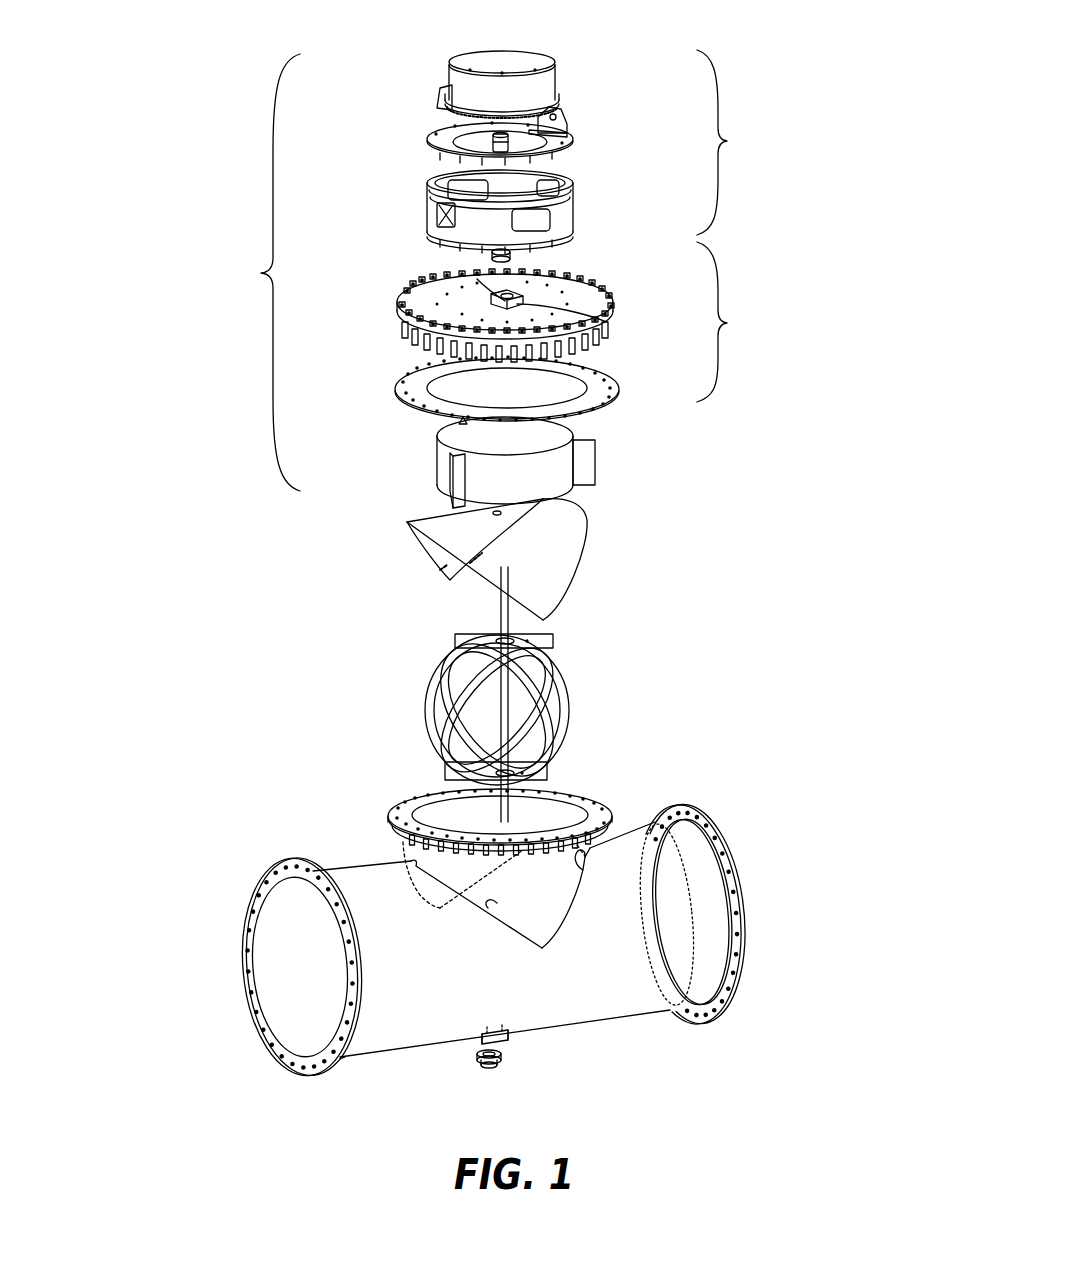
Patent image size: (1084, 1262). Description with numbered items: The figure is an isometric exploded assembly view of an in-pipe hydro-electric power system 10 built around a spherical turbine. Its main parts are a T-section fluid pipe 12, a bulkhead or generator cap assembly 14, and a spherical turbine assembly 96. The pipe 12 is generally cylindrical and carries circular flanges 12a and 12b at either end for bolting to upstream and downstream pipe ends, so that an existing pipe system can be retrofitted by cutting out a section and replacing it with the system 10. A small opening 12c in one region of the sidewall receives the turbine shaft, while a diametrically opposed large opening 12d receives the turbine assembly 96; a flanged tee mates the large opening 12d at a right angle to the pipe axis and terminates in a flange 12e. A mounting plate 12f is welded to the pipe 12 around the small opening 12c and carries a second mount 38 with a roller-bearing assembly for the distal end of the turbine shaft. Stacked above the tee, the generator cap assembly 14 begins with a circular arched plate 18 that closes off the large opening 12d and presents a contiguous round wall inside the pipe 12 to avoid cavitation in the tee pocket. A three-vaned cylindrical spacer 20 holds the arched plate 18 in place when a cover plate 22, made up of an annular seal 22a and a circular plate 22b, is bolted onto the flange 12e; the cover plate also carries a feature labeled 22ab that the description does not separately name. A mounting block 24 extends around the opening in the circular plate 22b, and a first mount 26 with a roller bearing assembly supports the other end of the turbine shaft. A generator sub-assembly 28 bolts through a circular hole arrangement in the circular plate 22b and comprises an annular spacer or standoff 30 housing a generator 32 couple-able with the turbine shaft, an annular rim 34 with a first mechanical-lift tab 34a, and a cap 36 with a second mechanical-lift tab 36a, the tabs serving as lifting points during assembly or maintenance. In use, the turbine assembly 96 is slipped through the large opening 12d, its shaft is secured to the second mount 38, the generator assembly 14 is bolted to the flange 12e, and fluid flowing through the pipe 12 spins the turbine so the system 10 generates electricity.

The in-pipe hydro-electric power system 10 is at (748, 1010).
The T-section fluid pipe 12 is at (508, 935).
The circular flange 12a is at (282, 858).
The circular flange 12b is at (722, 828).
The small opening 12c is at (496, 1030).
The large opening 12d is at (592, 856).
The flange 12e is at (418, 803).
The mounting plate 12f is at (510, 1041).
The generator cap assembly 14 is at (262, 272).
The circular arched plate 18 is at (588, 558).
The 3-vaned cylindrical spacer 20 is at (590, 451).
The cover plate 22 is at (727, 322).
The annular seal 22a is at (400, 381).
The central mount 22ab is at (480, 294).
The circular plate 22b is at (600, 292).
The mounting block 24 is at (583, 298).
The first mount 26 is at (491, 256).
The generator sub-assembly 28 is at (727, 142).
The annular spacer or standoff 30 is at (428, 184).
The generator 32 is at (548, 146).
The annular rim 34 is at (430, 134).
The first mechanical-lift tab 34a is at (568, 117).
The cap 36 is at (557, 68).
The second mechanical-lift tab 36a is at (441, 92).
The second mount 38 is at (476, 1059).
The spherical turbine assembly 96 is at (604, 708).